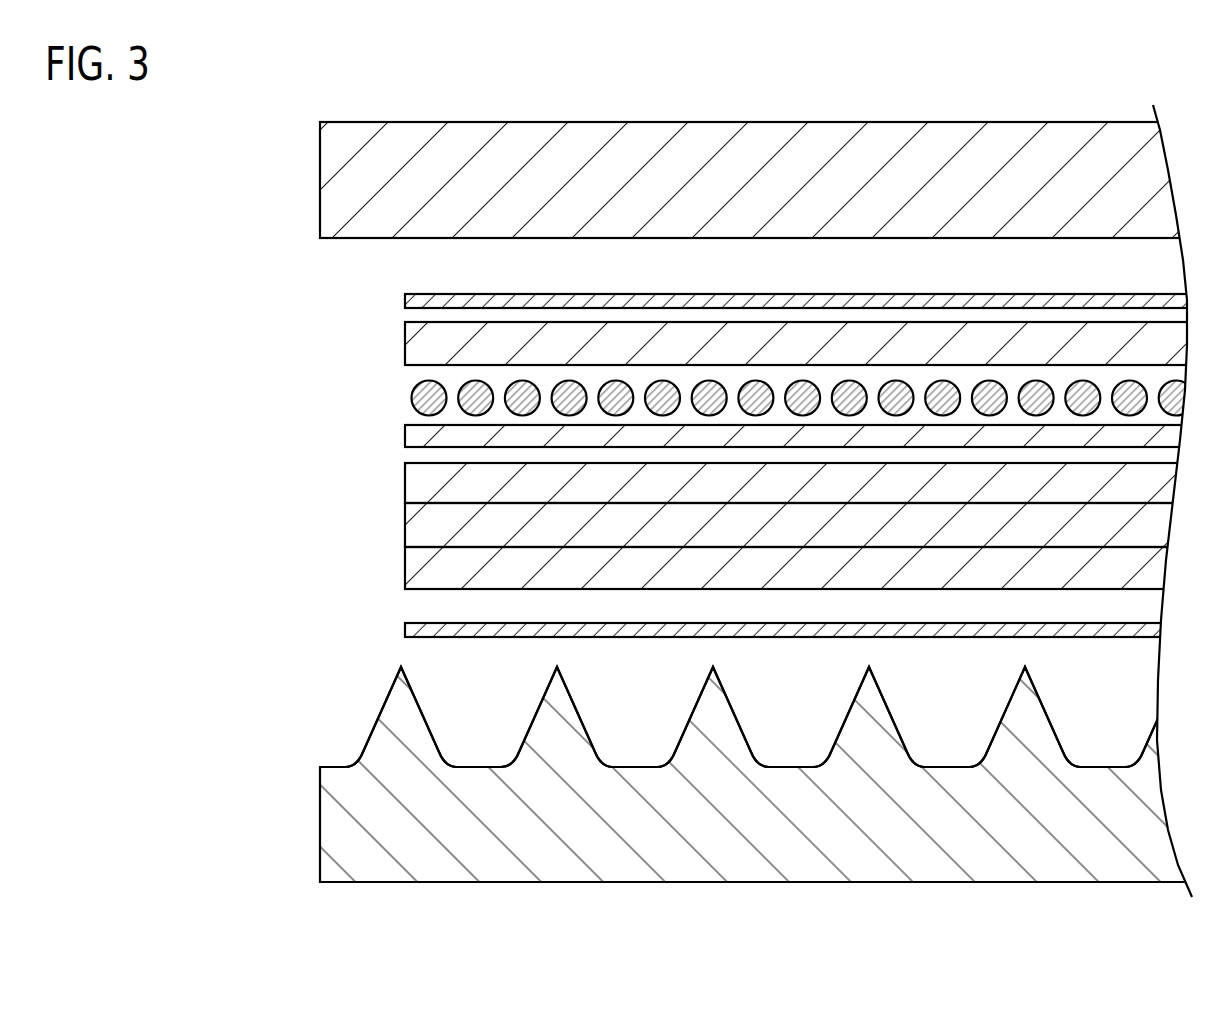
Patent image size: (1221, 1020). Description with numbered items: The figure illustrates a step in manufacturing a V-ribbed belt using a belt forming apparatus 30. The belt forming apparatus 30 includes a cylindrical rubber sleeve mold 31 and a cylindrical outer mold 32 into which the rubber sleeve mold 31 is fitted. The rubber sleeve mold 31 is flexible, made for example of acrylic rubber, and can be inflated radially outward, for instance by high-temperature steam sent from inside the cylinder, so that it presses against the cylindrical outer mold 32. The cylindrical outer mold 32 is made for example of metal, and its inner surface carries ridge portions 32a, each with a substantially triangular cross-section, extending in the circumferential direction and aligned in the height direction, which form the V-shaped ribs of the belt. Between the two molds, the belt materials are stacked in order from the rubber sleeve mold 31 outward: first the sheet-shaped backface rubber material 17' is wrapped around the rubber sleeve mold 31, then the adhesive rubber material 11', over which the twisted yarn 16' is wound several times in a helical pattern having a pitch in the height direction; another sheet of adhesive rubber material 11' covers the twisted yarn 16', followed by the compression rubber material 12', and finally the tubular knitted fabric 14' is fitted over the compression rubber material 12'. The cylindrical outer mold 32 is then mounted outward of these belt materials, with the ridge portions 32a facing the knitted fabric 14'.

The belt forming apparatus 30 is at (165, 425).
The rubber sleeve mold 31 is at (338, 193).
The cylindrical outer mold 32 is at (345, 822).
The ridge portions 32a is at (402, 717).
The backface rubber material 17' is at (778, 301).
The adhesive rubber material 11' is at (778, 385).
The twisted yarn 16' is at (803, 331).
The compression rubber material 12' is at (777, 526).
The knitted fabric 14' is at (778, 631).